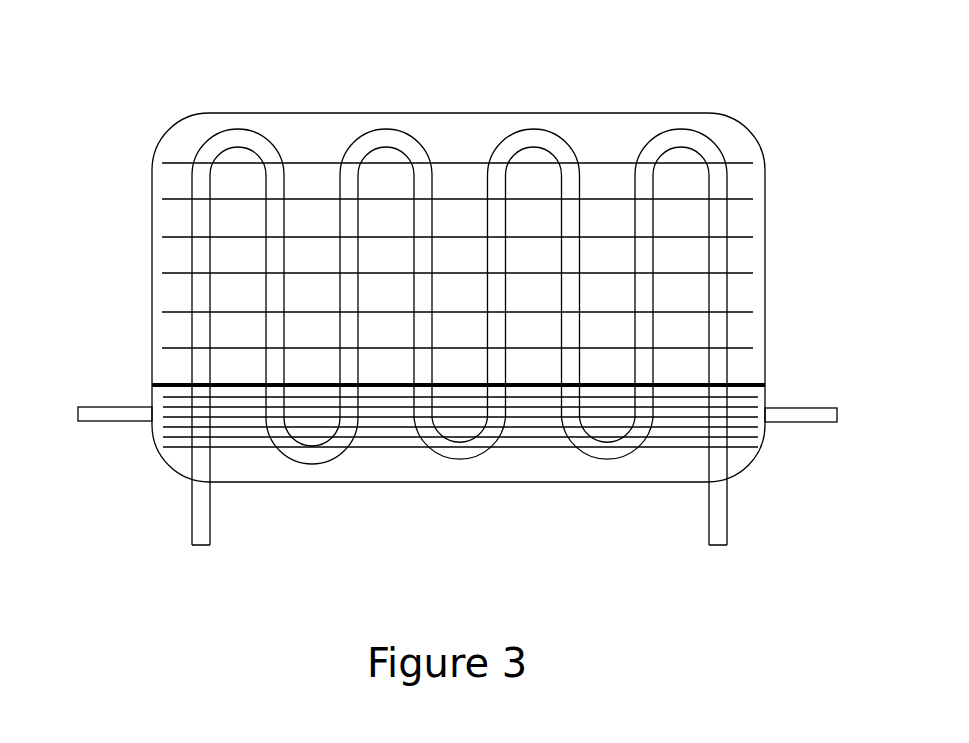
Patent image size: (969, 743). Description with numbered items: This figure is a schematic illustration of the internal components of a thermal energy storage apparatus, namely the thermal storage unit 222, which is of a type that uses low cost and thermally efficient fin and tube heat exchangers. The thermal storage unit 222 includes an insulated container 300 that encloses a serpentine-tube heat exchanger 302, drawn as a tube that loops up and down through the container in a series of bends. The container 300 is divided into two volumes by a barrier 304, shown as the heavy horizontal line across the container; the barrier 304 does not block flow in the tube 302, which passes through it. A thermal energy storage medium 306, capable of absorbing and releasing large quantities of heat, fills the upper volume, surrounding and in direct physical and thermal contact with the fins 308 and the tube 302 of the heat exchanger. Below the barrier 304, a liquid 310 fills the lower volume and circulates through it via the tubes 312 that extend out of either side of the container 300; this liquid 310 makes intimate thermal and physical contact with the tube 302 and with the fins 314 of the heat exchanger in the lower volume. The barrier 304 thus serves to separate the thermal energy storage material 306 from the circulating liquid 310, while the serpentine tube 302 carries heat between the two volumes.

The thermal storage unit 222 is at (134, 85).
The insulated container 300 is at (738, 117).
The serpentine-tube heat exchanger 302 is at (432, 188).
The barrier 304 is at (747, 385).
The thermal energy storage medium 306 is at (597, 187).
The fins 308 is at (740, 312).
The liquid 310 is at (435, 474).
The tubes 312 is at (123, 421).
The fins 314 is at (503, 437).